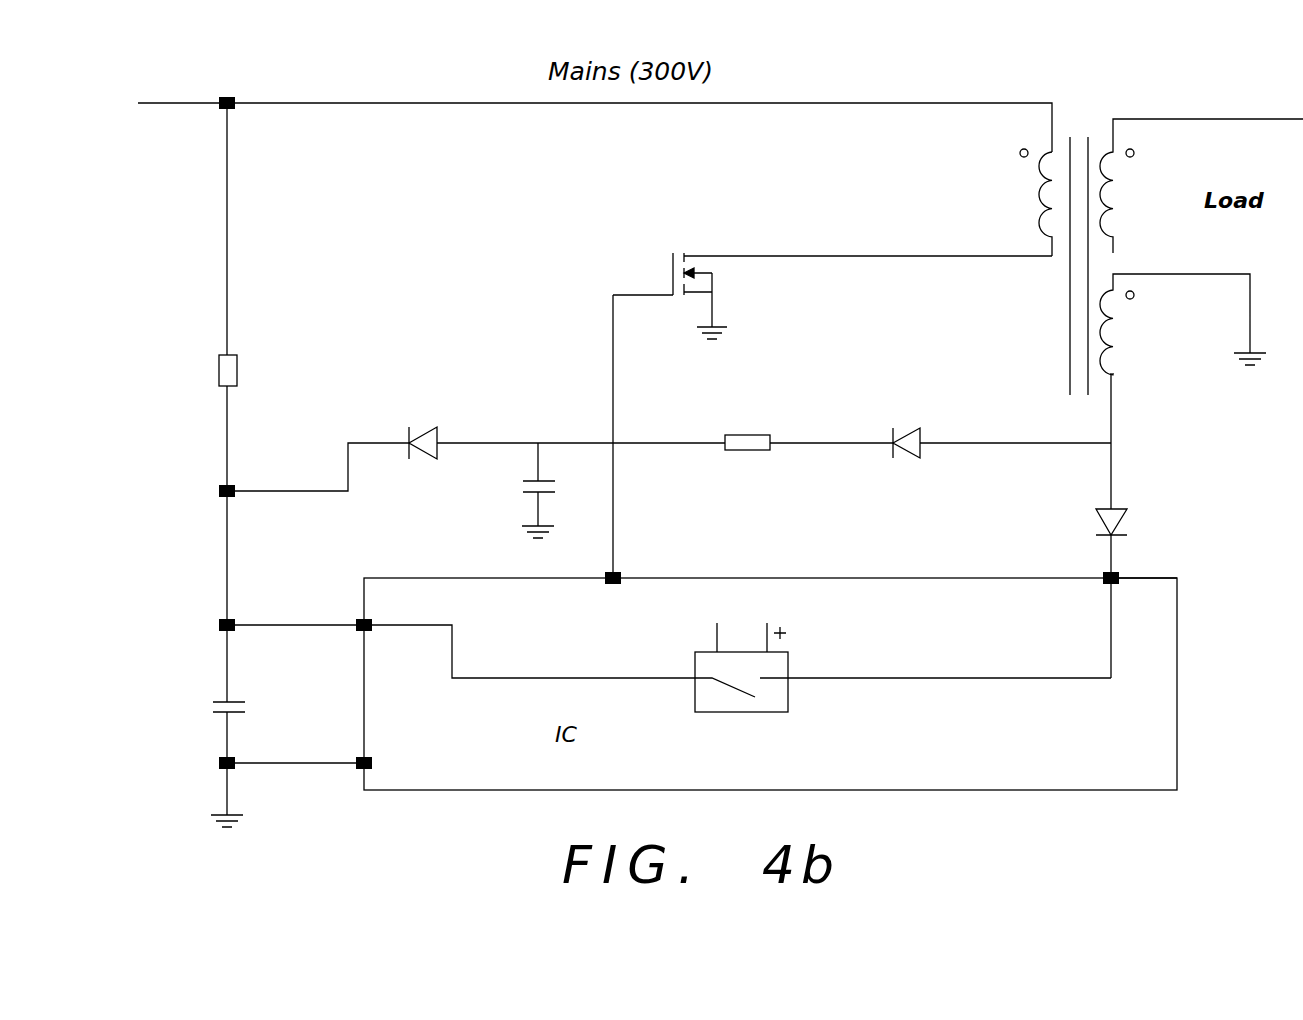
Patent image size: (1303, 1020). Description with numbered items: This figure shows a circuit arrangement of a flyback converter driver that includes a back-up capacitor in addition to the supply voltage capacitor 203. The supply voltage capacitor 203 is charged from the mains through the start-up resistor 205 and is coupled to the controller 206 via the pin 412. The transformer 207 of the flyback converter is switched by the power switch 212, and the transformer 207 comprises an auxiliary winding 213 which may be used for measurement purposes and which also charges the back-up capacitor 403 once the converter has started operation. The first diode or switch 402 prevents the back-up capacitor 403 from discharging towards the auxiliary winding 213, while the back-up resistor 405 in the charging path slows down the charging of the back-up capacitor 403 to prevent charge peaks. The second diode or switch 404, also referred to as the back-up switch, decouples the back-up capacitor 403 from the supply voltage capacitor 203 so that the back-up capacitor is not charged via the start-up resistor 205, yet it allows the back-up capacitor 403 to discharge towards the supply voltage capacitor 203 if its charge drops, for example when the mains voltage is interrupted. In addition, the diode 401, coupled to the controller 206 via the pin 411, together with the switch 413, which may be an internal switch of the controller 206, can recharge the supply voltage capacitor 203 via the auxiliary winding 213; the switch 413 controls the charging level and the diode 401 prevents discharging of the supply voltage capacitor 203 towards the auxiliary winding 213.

The supply voltage capacitor 203 is at (211, 708).
The start-up resistor 205 is at (216, 370).
The controller 206 is at (1177, 735).
The transformer 207 is at (1002, 190).
The power switch 212 is at (715, 270).
The auxiliary winding 213 is at (1120, 334).
The diode 401 is at (1094, 522).
The first diode or switch 402 is at (908, 425).
The back-up capacitor 403 is at (520, 486).
The second diode or switch 404 is at (425, 421).
The back-up resistor 405 is at (755, 456).
The pin 411 is at (1105, 586).
The pin 412 is at (352, 620).
The switch 413 is at (745, 712).